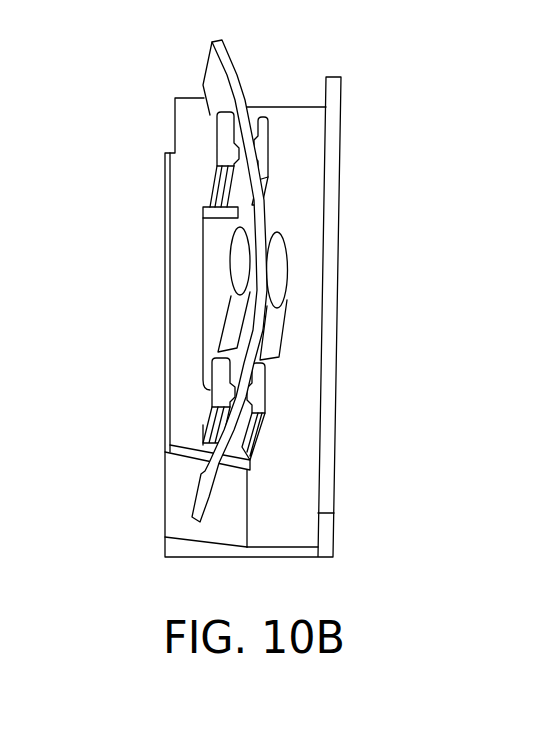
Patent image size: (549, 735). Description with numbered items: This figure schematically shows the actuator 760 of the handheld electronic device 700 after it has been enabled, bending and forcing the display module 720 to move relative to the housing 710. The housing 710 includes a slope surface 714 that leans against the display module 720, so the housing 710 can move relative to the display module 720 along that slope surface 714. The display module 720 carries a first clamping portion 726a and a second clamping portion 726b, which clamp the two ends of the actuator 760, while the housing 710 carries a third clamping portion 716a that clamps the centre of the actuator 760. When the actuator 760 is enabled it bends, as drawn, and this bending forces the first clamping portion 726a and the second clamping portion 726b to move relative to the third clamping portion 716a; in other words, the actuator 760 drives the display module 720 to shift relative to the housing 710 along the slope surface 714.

The handheld electronic device 700 is at (430, 562).
The housing 710 is at (334, 180).
The slope surface 714 is at (184, 498).
The third clamping portion 716a is at (240, 270).
The display module 720 is at (182, 195).
The first clamping portion 726a is at (225, 135).
The second clamping portion 726b is at (217, 378).
The actuator 760 is at (205, 78).